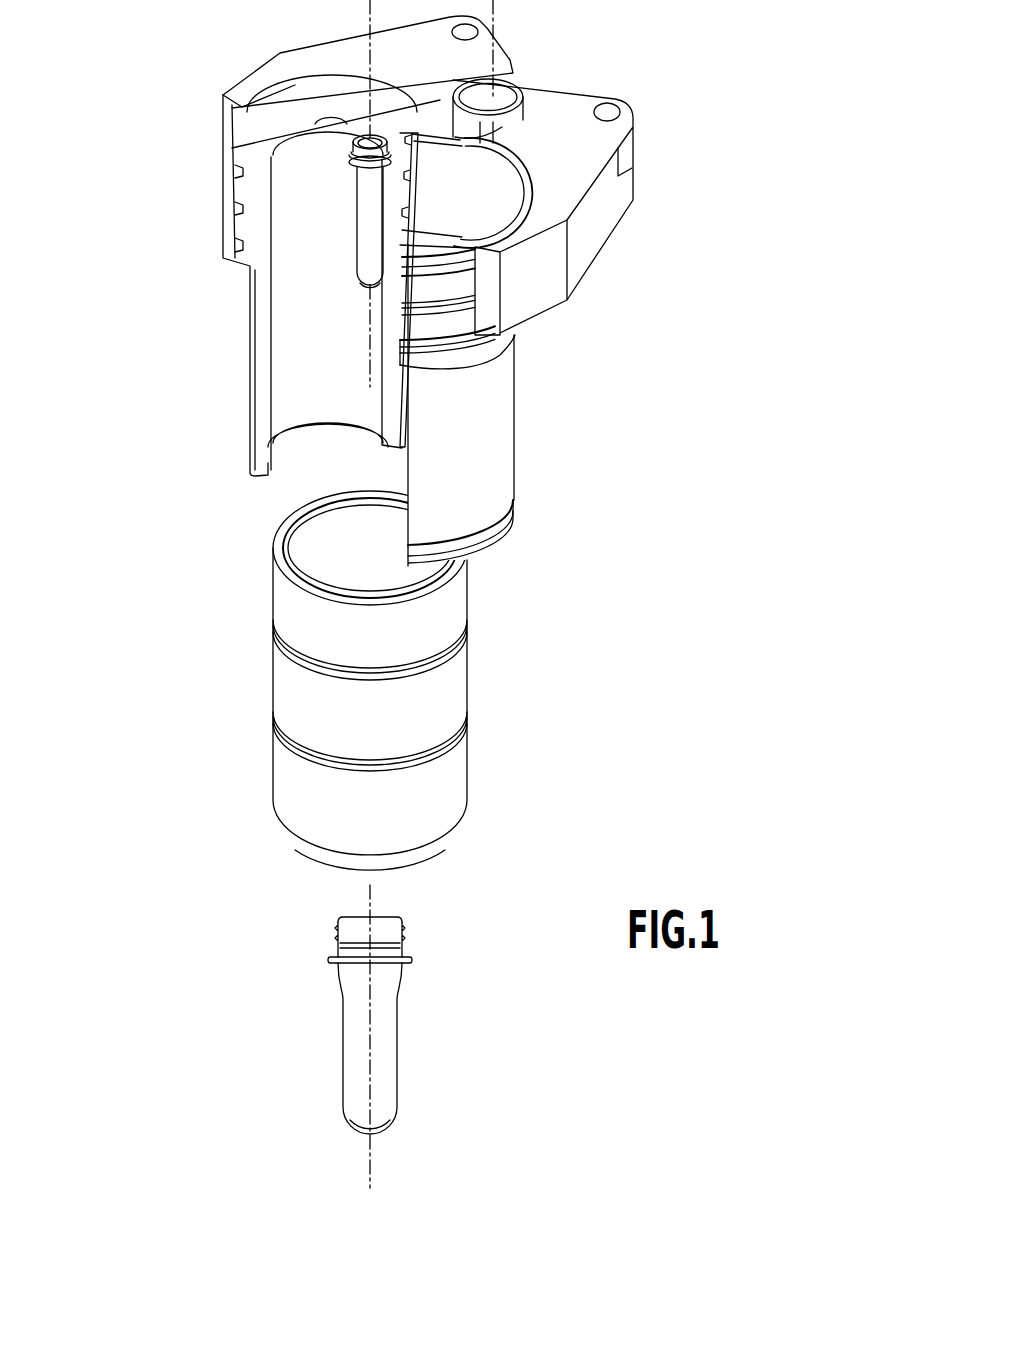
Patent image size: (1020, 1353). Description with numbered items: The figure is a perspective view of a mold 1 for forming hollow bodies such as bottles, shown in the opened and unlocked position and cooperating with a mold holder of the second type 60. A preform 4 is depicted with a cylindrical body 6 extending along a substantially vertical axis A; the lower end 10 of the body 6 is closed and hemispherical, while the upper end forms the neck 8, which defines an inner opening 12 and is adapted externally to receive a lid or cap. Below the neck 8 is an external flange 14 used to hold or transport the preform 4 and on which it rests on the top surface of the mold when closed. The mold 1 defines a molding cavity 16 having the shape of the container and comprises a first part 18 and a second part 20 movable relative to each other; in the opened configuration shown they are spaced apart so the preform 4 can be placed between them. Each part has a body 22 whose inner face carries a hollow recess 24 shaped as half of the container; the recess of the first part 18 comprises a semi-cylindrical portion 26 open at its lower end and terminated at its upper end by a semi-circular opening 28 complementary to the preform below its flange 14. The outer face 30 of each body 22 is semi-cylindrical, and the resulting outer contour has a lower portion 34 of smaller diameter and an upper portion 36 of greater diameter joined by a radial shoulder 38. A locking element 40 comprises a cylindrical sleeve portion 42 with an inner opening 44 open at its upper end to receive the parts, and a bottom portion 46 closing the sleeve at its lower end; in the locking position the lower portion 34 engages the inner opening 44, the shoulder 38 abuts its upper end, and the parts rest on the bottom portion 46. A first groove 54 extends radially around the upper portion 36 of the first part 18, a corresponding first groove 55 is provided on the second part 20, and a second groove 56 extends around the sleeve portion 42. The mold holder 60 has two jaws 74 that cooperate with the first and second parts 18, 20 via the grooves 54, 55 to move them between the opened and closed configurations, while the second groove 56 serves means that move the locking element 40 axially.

The mold 1 is at (197, 470).
The preform 4 is at (341, 610).
The body 6 is at (367, 240).
The neck 8 is at (250, 144).
The lower end 10 is at (367, 281).
The inner opening 12 is at (370, 136).
The external flange 14 is at (355, 163).
The molding cavity 16 is at (297, 388).
The first part 18 is at (257, 328).
The second part 20 is at (473, 463).
The body 22 is at (257, 373).
The hollow recess 24 is at (330, 388).
The semi-cylindrical portion 26 is at (293, 277).
The semi-circular opening 28 is at (257, 110).
The outer face 30 is at (452, 500).
The lower portion 34 is at (490, 500).
The upper portion 36 is at (457, 292).
The shoulder 38 is at (480, 357).
The locking element 40 is at (283, 683).
The sleeve portion 42 is at (447, 680).
The inner opening 44 is at (313, 547).
The bottom portion 46 is at (308, 855).
The first groove 54 is at (235, 172).
The first groove 55 is at (543, 230).
The second groove 56 is at (298, 752).
The mold holder of the second type 60 is at (655, 80).
The jaw 74 is at (267, 77).
The axis A is at (375, 900).